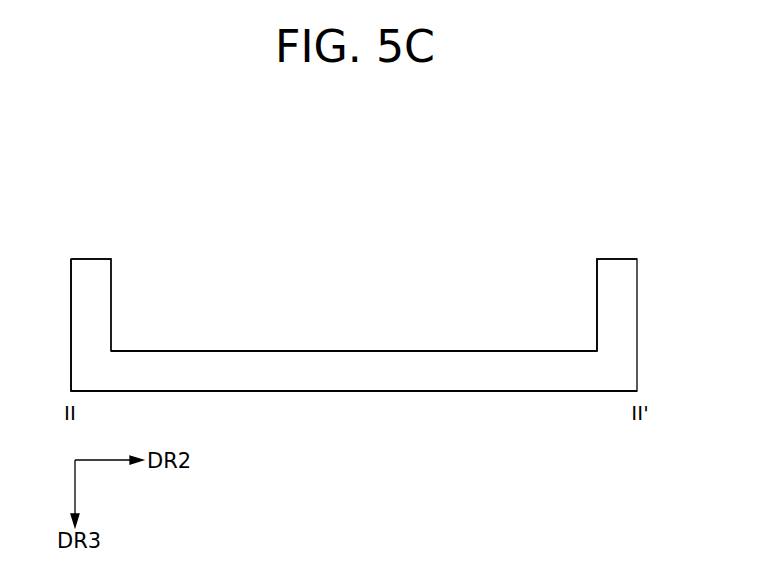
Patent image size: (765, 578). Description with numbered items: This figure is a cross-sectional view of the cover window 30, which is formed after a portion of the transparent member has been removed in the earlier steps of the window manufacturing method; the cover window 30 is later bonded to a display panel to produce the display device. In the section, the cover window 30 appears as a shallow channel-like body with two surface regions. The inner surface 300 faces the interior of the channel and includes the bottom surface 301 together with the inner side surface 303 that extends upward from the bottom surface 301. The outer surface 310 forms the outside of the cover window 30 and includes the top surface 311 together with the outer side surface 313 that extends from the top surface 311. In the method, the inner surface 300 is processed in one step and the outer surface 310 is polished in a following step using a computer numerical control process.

The cover window 30 is at (624, 320).
The outer surface 310 is at (38, 191).
The outer side surface 313 is at (68, 286).
The top surface 311 is at (178, 391).
The inner surface 300 is at (503, 191).
The bottom surface 301 is at (523, 351).
The inner side surface 303 is at (597, 290).